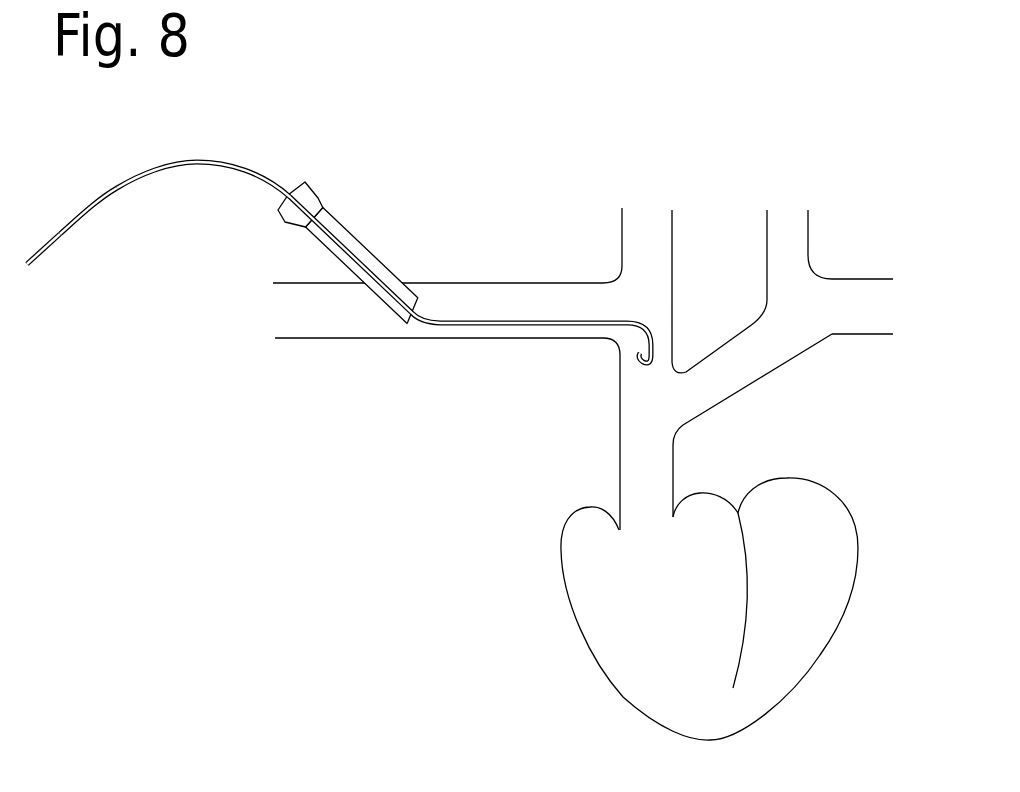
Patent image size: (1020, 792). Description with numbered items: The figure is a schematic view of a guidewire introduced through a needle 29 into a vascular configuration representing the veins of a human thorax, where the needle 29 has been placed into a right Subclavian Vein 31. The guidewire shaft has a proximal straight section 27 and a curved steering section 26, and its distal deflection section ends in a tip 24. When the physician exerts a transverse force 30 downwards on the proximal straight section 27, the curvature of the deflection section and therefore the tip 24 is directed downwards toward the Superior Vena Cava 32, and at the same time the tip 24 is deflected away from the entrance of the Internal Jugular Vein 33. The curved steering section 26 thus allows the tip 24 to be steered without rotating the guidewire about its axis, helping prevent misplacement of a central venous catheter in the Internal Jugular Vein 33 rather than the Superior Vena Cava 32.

The tip end 24 is at (652, 363).
The curved steering section 26 is at (238, 170).
The proximal straight section 27 is at (50, 248).
The needle 29 is at (360, 252).
The transverse force 30 is at (80, 210).
The right Subclavian Vein 31 is at (352, 338).
The Superior Vena Cava 32 is at (673, 470).
The left Internal Jugular Vein 33 is at (650, 238).